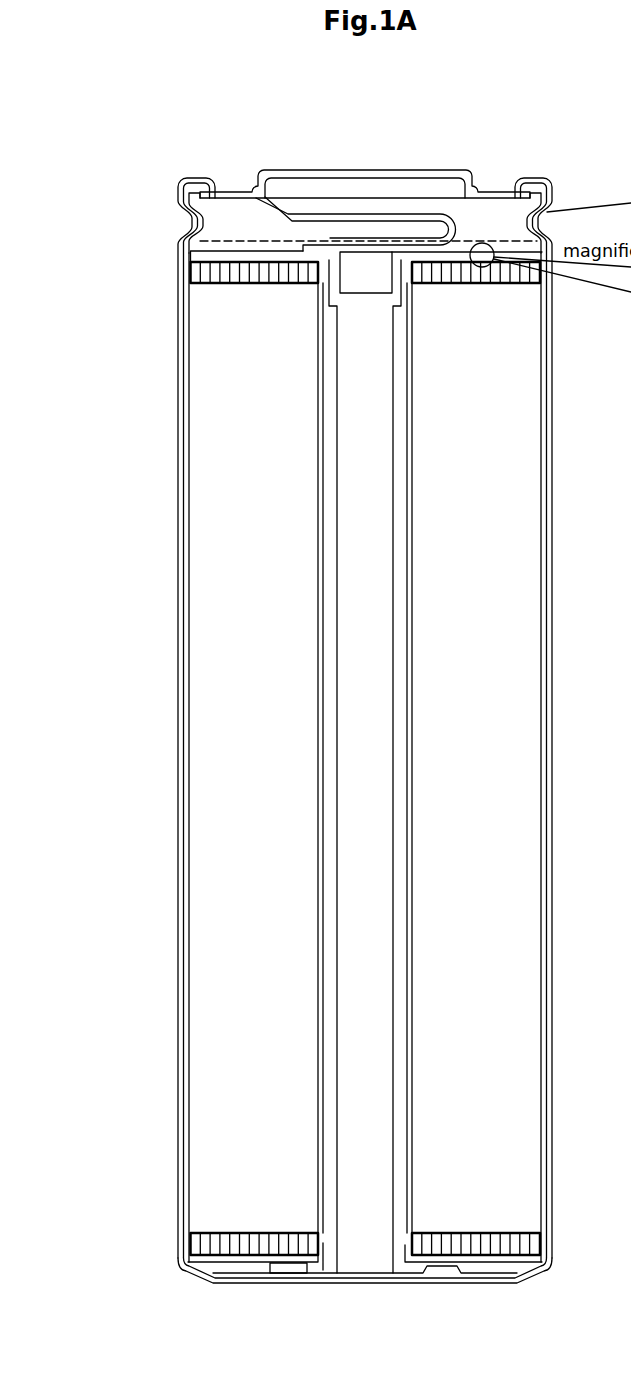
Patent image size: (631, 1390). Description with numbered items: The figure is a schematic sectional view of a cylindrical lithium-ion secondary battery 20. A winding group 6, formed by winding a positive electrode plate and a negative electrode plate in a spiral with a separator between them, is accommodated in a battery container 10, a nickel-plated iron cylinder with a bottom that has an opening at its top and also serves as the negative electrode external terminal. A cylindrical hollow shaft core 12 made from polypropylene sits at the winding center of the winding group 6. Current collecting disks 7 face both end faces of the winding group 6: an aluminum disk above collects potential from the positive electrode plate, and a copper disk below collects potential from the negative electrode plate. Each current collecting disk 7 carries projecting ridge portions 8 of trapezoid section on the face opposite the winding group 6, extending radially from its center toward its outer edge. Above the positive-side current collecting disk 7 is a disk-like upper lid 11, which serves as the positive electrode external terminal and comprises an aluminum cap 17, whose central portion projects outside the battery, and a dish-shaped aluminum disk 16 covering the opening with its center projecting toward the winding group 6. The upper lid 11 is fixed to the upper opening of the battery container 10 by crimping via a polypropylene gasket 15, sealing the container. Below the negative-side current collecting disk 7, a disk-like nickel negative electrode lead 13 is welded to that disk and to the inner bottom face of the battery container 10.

The cylindrical lithium-ion secondary battery 20 is at (365, 107).
The upper lid 11 is at (495, 160).
The cap 17 is at (287, 170).
The disk 16 is at (413, 213).
The gasket 15 is at (180, 203).
The projecting ridge portion 8 is at (200, 232).
The current collecting disk 7 is at (218, 253).
The battery container 10 is at (183, 440).
The winding group 6 is at (223, 588).
The shaft core 12 is at (322, 795).
The negative electrode lead 13 is at (300, 1267).